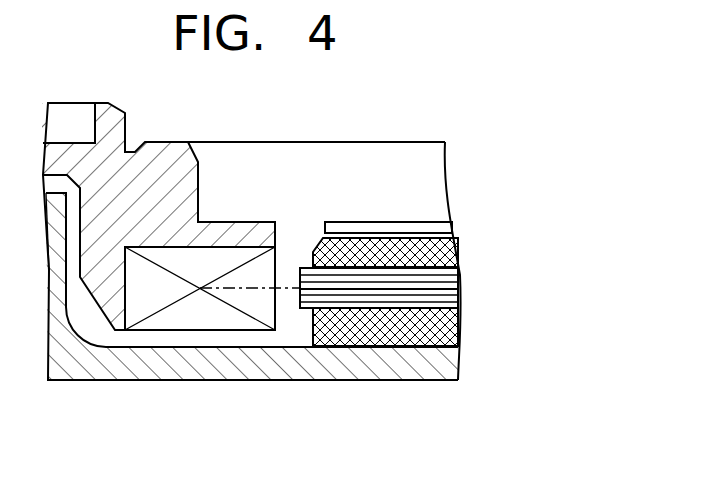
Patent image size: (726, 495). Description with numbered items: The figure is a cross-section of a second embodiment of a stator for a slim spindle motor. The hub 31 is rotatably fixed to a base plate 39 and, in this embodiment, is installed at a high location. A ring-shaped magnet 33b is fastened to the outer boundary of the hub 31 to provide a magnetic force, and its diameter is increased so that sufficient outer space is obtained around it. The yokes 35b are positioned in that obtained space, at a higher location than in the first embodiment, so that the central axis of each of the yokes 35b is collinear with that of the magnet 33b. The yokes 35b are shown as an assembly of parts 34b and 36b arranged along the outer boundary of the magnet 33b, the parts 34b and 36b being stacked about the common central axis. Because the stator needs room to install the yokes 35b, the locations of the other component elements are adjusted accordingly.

The hub 31 is at (175, 155).
The magnet 33b is at (215, 318).
The magnet 34b is at (453, 288).
The yokes 35b is at (455, 291).
The yoke 36b is at (453, 252).
The base plate 39 is at (343, 372).